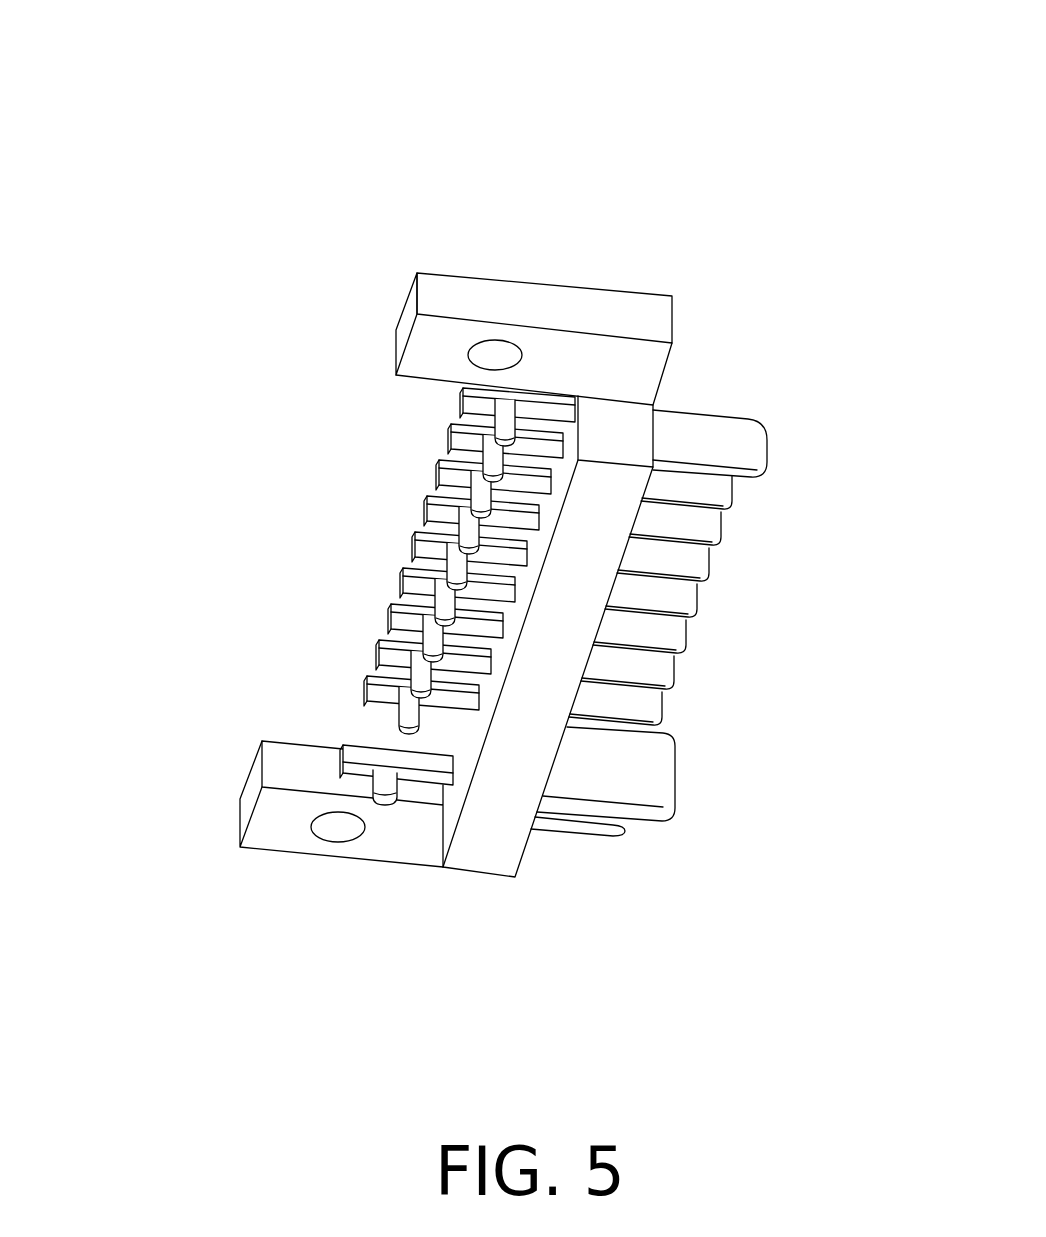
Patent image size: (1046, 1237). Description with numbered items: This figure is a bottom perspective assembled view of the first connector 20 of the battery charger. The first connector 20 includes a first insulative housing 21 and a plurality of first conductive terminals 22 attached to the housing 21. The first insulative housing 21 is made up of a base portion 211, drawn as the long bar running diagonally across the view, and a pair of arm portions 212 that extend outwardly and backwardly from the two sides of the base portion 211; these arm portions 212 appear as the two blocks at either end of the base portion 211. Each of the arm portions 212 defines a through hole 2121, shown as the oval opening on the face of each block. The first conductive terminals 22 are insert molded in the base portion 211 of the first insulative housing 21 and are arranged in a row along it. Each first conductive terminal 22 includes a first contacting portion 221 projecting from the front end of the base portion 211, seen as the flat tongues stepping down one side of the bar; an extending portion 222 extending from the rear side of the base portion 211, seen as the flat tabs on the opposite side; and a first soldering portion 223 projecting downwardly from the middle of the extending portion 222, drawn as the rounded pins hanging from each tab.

The first connector 20 is at (591, 48).
The first insulative housing 21 is at (656, 347).
The base portion 211 is at (492, 850).
The arm portions 212 is at (286, 829).
The through hole 2121 is at (338, 833).
The first conductive terminals 22 is at (589, 612).
The first contacting portion 221 is at (740, 452).
The extending portion 222 is at (470, 398).
The first soldering portion 223 is at (504, 433).